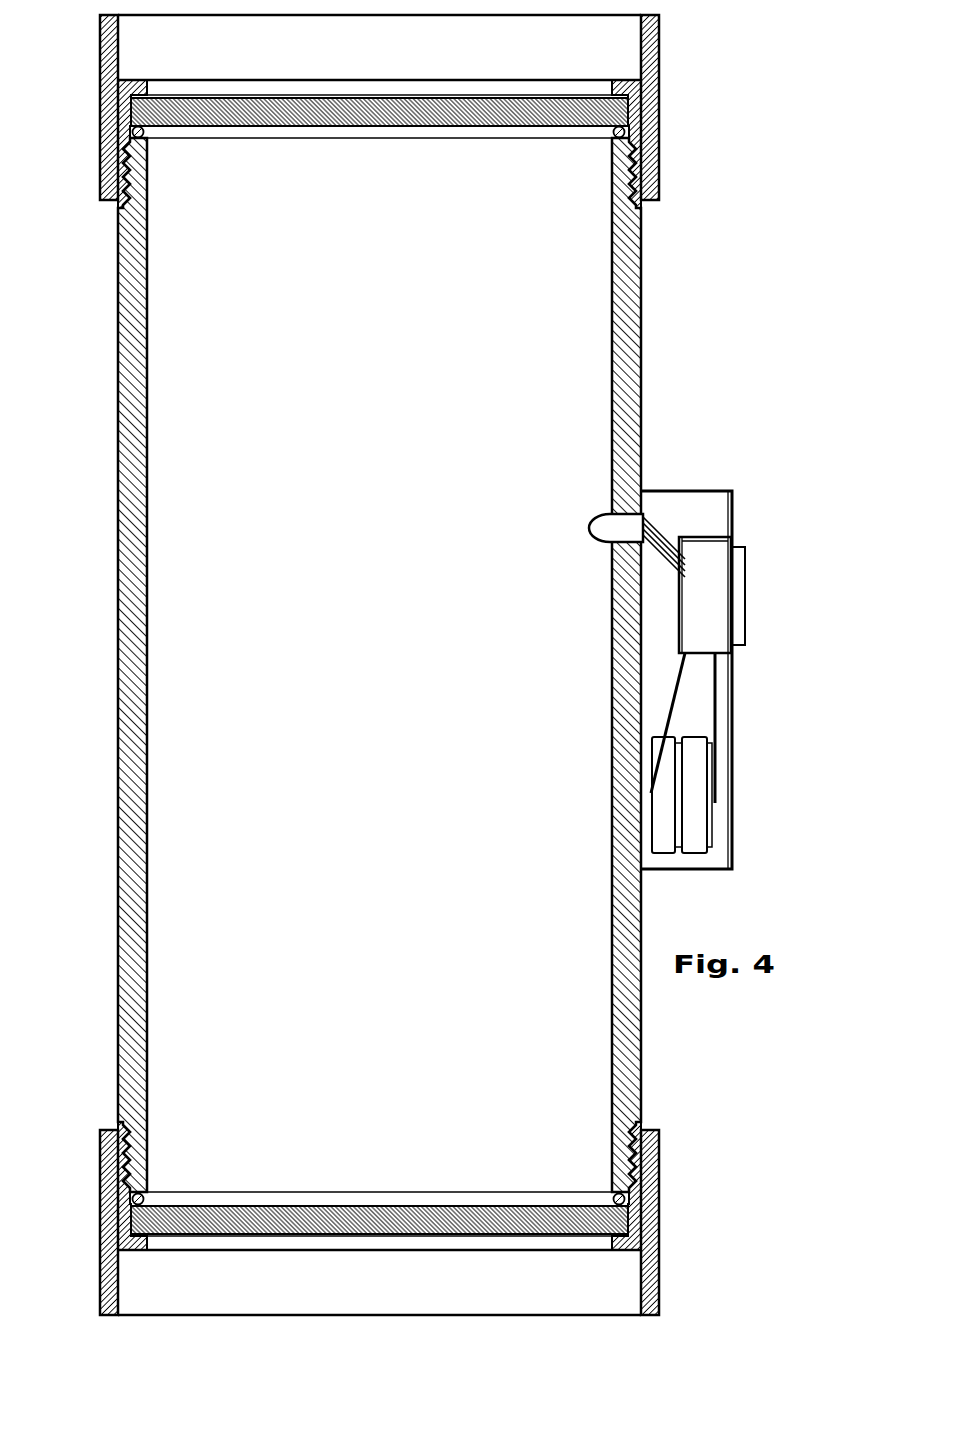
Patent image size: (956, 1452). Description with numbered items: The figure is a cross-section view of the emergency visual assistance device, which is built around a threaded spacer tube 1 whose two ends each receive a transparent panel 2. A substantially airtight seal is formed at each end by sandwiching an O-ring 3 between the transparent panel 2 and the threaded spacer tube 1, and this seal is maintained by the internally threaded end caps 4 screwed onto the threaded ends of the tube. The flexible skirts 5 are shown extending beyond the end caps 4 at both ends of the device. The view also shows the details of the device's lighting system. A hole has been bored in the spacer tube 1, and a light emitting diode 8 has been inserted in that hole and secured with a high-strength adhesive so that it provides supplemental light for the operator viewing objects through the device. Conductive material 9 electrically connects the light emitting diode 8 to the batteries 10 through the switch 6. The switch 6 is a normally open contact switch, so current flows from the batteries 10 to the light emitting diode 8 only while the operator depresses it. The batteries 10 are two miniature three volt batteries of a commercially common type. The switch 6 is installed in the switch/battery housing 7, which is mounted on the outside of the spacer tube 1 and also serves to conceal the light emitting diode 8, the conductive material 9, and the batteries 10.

The threaded spacer tube 1 is at (641, 288).
The transparent panel 2 is at (625, 108).
The O-ring 3 is at (622, 133).
The internally threaded end cap 4 is at (625, 168).
The flexible skirt 5 is at (659, 39).
The switch 6 is at (720, 592).
The switch/battery housing 7 is at (728, 825).
The light emitting diode 8 is at (613, 525).
The conductive material 9 is at (655, 528).
The batteries 10 is at (696, 823).